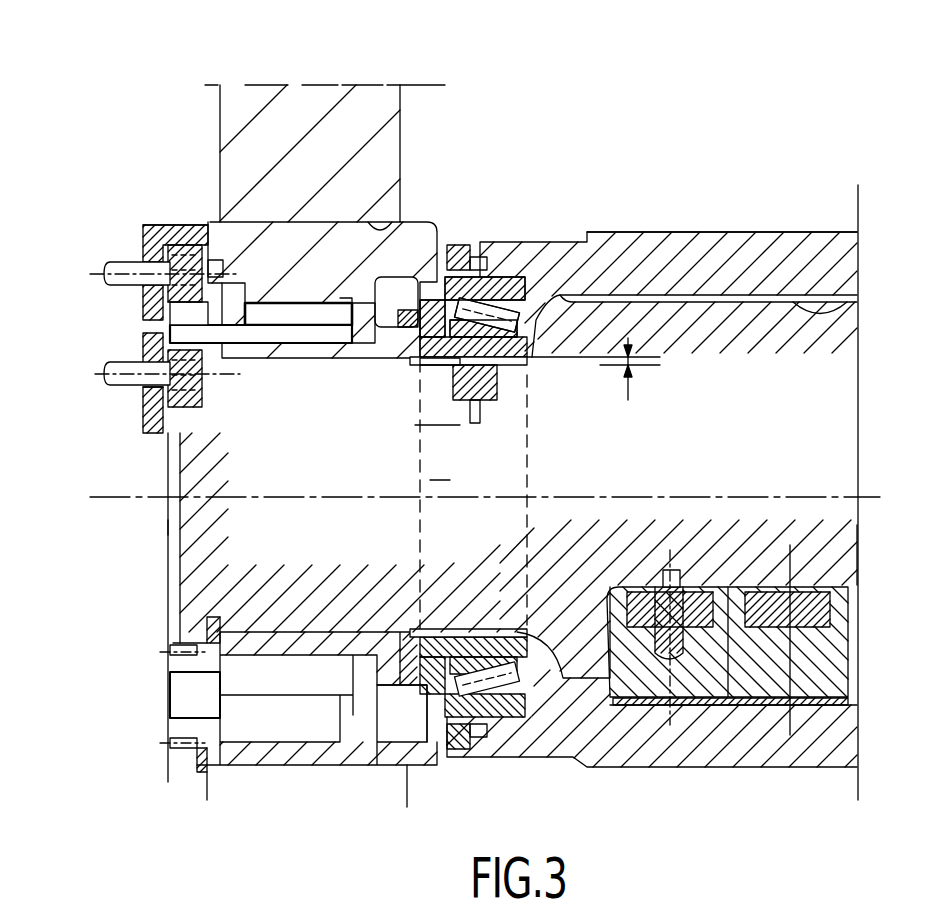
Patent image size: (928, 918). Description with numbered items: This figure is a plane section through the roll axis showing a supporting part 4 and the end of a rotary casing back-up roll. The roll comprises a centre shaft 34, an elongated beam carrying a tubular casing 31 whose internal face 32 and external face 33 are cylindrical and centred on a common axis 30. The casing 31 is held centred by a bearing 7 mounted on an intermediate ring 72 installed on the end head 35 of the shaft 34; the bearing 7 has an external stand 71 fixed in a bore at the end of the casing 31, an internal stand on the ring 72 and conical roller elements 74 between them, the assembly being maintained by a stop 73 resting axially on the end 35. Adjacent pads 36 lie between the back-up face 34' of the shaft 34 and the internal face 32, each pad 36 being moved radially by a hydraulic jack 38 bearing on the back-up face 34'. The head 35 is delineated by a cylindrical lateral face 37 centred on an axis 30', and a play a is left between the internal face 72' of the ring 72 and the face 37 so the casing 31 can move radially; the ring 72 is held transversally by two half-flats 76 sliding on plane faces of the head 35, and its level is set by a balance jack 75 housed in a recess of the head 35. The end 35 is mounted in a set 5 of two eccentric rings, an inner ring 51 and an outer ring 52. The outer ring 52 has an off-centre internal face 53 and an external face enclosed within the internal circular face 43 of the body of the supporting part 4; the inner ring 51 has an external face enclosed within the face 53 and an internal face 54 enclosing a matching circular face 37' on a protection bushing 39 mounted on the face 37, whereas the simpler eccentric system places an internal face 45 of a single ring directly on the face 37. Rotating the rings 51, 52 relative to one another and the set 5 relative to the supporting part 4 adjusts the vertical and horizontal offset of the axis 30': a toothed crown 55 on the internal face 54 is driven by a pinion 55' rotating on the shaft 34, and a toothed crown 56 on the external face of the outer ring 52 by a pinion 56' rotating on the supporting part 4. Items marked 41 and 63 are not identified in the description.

The supporting part 4 is at (238, 245).
The set of two eccentric rings 5 is at (130, 323).
The bearing 7 is at (500, 305).
The axis 30 is at (503, 465).
The axis of the end head 30' is at (151, 526).
The tubular casing 31 is at (762, 253).
The internal face 32 is at (858, 294).
The external face 33 is at (677, 232).
The centre shaft 34 is at (727, 358).
The back-up face 34' is at (840, 547).
The end head 35 is at (190, 563).
The pad 36 is at (827, 680).
The lateral cylindrical face 37 is at (462, 586).
The matching circular face 37' is at (366, 725).
The hydraulic jack 38 is at (830, 592).
The protection bushing 39 is at (292, 355).
The gear 41 is at (250, 240).
The internal circular face 43 is at (262, 238).
The internal face of eccentric ring 45 is at (195, 458).
The inner ring 51 is at (325, 335).
The outer ring 52 is at (298, 315).
The internal face of the outer ring 53 is at (338, 300).
The internal face of the inner ring 54 is at (270, 300).
The toothed crown 55 is at (160, 396).
The pinion 55' is at (121, 401).
The toothed crown 56 is at (160, 279).
The pinion 56' is at (144, 234).
The groove 63 is at (390, 222).
The external stand 71 is at (543, 280).
The intermediate ring 72 is at (483, 257).
The internal face of the intermediate ring 72' is at (408, 397).
The stop 73 is at (437, 333).
The roller elements 74 is at (507, 278).
The balance jack 75 is at (427, 430).
The half-flats 76 is at (440, 482).
The play a is at (593, 369).